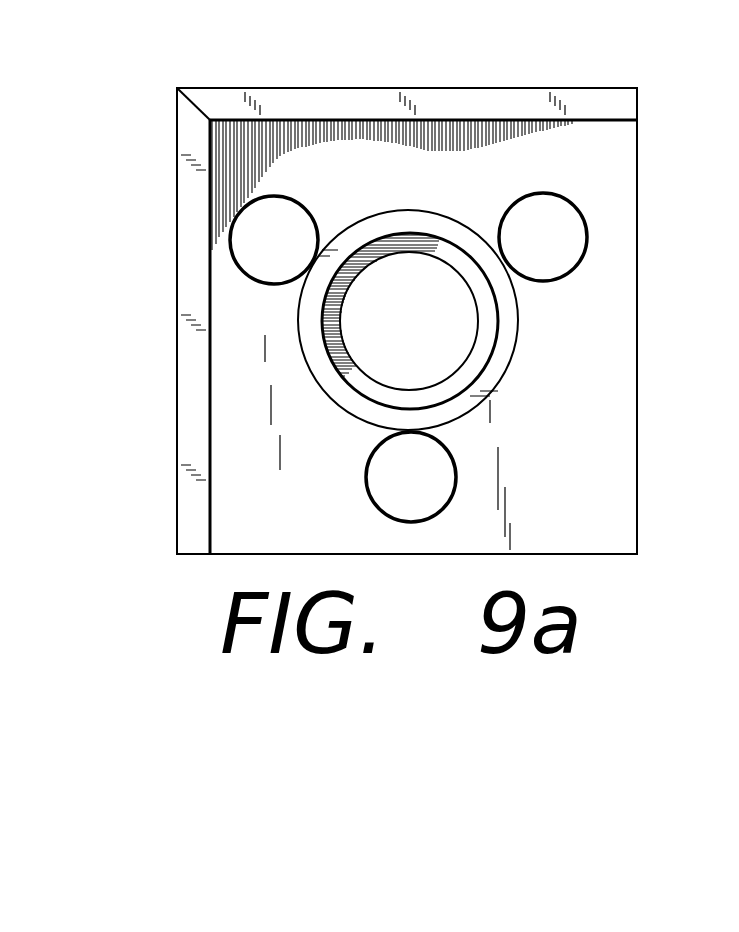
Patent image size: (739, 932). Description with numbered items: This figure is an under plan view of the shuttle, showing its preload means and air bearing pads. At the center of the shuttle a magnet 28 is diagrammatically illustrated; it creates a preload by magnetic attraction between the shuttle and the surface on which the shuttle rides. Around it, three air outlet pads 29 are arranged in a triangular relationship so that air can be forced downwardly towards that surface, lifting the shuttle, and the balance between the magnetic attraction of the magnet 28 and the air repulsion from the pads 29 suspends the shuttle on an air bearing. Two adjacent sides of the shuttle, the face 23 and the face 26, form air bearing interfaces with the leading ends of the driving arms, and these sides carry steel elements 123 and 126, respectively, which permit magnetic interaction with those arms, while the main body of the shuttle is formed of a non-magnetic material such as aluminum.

The face of the shuttle 23 is at (366, 76).
The steel element 123 is at (590, 92).
The face of the shuttle 26 is at (150, 343).
The steel element 126 is at (184, 425).
The magnet 28 is at (497, 381).
The air outlet pads 29 is at (305, 209).